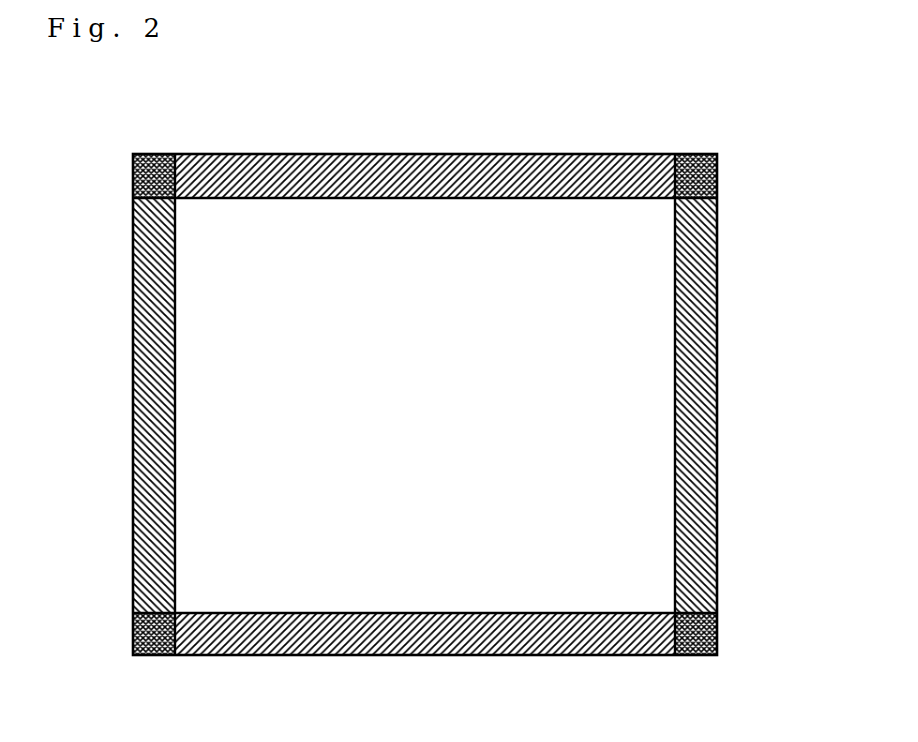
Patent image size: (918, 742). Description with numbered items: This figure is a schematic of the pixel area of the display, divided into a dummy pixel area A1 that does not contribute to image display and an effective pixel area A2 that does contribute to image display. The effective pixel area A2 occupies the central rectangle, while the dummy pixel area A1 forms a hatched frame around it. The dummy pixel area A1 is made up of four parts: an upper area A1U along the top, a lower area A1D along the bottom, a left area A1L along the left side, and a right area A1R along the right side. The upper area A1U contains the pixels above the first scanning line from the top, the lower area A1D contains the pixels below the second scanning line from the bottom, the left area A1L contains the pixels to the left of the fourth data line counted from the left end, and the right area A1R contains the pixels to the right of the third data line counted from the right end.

The dummy pixel area A1 is at (436, 410).
The upper area A1U is at (417, 155).
The lower area A1D is at (432, 655).
The left area A1L is at (133, 422).
The right area A1R is at (718, 413).
The effective pixel area A2 is at (222, 232).